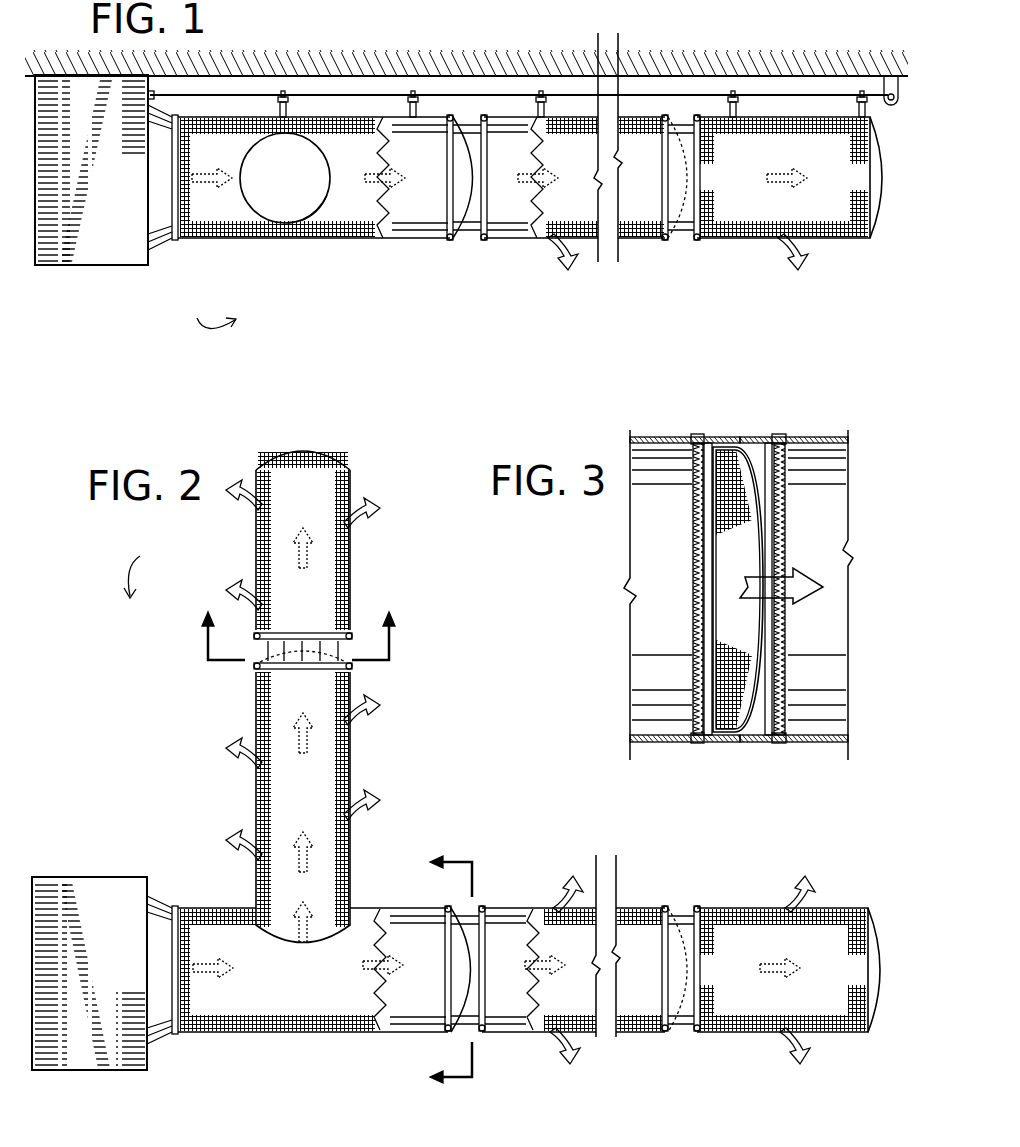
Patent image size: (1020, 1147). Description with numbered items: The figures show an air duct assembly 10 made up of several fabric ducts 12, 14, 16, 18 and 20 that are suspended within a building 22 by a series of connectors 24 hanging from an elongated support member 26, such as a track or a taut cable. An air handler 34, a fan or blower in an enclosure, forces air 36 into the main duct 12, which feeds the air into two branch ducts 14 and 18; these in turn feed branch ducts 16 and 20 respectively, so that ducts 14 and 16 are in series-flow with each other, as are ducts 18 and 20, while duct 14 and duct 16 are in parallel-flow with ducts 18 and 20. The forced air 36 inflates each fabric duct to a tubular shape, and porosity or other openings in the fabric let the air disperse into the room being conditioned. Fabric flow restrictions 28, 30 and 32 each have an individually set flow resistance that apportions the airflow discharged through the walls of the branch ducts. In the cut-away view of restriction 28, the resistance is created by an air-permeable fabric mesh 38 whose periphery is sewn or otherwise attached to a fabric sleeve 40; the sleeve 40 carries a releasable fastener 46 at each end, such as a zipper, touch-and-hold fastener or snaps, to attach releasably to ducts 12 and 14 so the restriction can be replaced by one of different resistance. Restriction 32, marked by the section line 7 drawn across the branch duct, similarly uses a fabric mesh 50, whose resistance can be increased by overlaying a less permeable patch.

In FIG. 1, the air duct assembly 10 is at (211, 309).
In FIG. 2, the air duct assembly 10 is at (145, 574).
In FIG. 1, the main duct 12 is at (316, 240).
In FIG. 2, the main duct 12 is at (323, 1034).
In FIG. 3, the main duct 12 is at (668, 437).
In FIG. 1, the branch duct 14 is at (516, 242).
In FIG. 2, the branch duct 14 is at (549, 1034).
In FIG. 3, the branch duct 14 is at (816, 437).
In FIG. 1, the branch duct 16 is at (818, 242).
In FIG. 2, the branch duct 16 is at (766, 1034).
In FIG. 1, the branch duct 18 is at (326, 160).
In FIG. 2, the branch duct 18 is at (350, 742).
In FIG. 1, the branch duct 20 is at (323, 203).
In FIG. 2, the branch duct 20 is at (350, 582).
In FIG. 1, the building 22 is at (820, 177).
In FIG. 1, the connector 24 is at (292, 102).
In FIG. 1, the elongated support member 26 is at (652, 66).
In FIG. 1, the flow restriction 28 is at (458, 270).
In FIG. 2, the flow restriction 28 is at (484, 890).
In FIG. 3, the flow restriction 28 is at (737, 412).
In FIG. 1, the flow restriction 30 is at (684, 258).
In FIG. 2, the flow restriction 30 is at (697, 888).
In FIG. 2, the flow restriction 32 is at (370, 680).
In FIG. 1, the air handler 34 is at (118, 266).
In FIG. 2, the air handler 34 is at (115, 877).
In FIG. 1, the air 36 is at (208, 178).
In FIG. 2, the air 36 is at (240, 492).
In FIG. 3, the air 36 is at (810, 596).
In FIG. 1, the fabric mesh 38 is at (470, 150).
In FIG. 2, the fabric mesh 38 is at (470, 964).
In FIG. 3, the fabric mesh 38 is at (752, 722).
In FIG. 3, the fabric sleeve 40 is at (750, 437).
In FIG. 1, the releasable fastener 46 is at (450, 242).
In FIG. 2, the releasable fastener 46 is at (572, 968).
In FIG. 3, the releasable fastener 46 is at (788, 496).
In FIG. 2, the fabric mesh 50 is at (300, 652).
In FIG. 2, the section line 7 is at (299, 621).